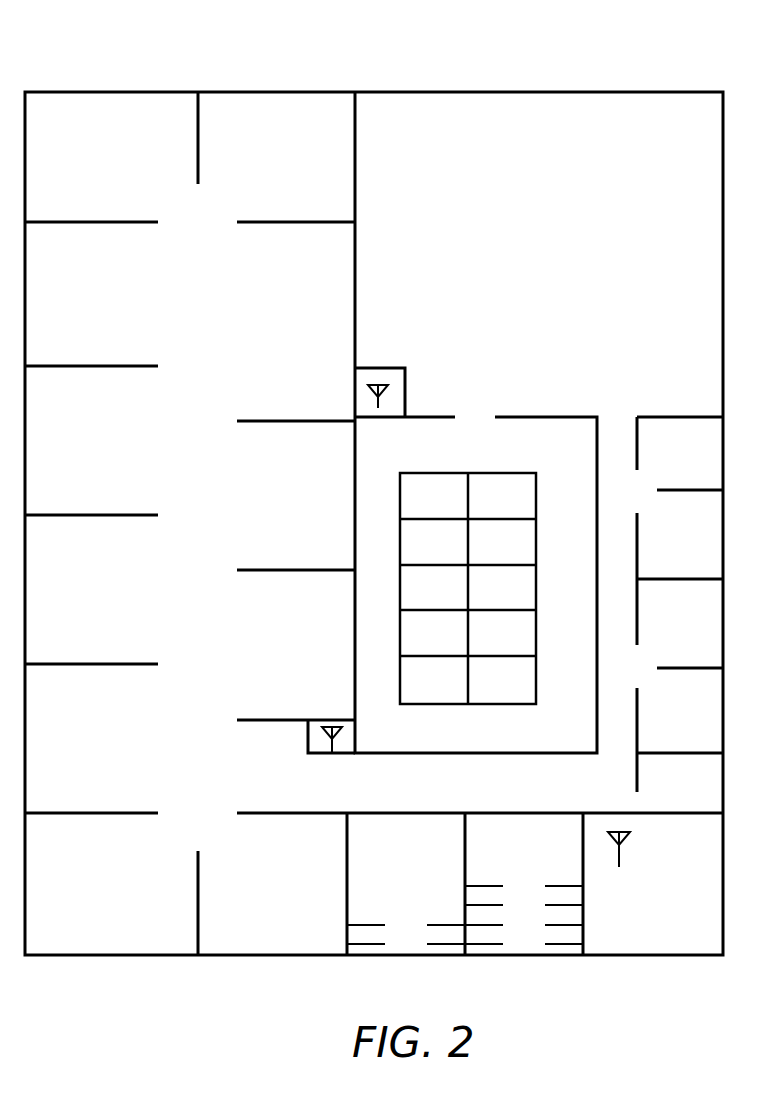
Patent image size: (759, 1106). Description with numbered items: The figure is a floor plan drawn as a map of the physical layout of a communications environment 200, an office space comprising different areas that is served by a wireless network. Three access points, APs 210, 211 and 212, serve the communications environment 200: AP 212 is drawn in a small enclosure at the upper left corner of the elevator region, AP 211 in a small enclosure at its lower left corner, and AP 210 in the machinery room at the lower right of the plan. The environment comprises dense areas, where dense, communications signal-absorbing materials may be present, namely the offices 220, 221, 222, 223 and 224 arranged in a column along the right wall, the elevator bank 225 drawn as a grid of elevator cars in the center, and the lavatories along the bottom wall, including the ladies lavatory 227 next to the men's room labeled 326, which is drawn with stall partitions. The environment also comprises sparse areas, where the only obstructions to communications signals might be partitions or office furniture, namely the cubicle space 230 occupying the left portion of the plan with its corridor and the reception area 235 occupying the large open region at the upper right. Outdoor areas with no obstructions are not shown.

The communications environment 200 is at (472, 40).
The AP 210 is at (628, 838).
The AP 211 is at (325, 733).
The AP 212 is at (387, 394).
The office 220 is at (655, 416).
The office 221 is at (666, 489).
The office 222 is at (655, 578).
The office 223 is at (666, 667).
The office 224 is at (655, 752).
The elevator bank 225 is at (537, 492).
The lavatory 227 is at (540, 870).
The cubicle space 230 is at (207, 489).
The reception area 235 is at (558, 250).
The men's room 326 is at (421, 870).